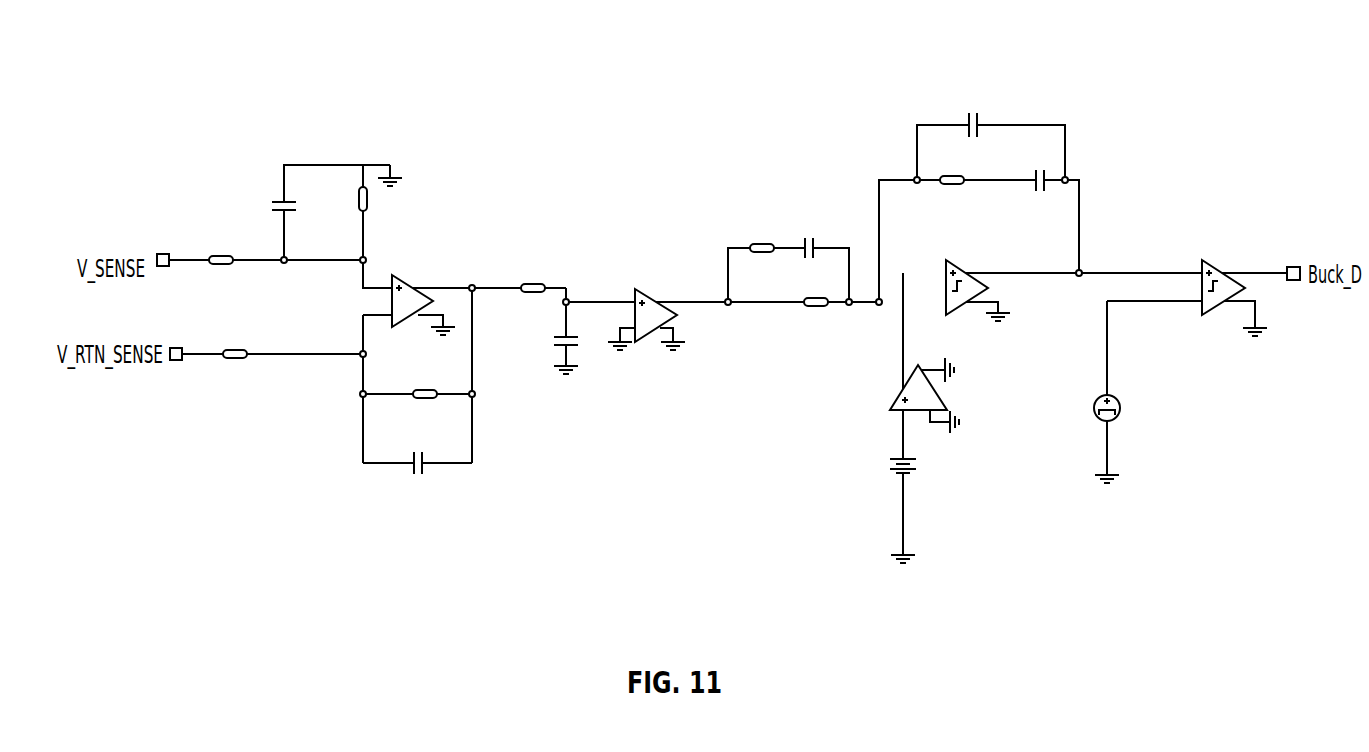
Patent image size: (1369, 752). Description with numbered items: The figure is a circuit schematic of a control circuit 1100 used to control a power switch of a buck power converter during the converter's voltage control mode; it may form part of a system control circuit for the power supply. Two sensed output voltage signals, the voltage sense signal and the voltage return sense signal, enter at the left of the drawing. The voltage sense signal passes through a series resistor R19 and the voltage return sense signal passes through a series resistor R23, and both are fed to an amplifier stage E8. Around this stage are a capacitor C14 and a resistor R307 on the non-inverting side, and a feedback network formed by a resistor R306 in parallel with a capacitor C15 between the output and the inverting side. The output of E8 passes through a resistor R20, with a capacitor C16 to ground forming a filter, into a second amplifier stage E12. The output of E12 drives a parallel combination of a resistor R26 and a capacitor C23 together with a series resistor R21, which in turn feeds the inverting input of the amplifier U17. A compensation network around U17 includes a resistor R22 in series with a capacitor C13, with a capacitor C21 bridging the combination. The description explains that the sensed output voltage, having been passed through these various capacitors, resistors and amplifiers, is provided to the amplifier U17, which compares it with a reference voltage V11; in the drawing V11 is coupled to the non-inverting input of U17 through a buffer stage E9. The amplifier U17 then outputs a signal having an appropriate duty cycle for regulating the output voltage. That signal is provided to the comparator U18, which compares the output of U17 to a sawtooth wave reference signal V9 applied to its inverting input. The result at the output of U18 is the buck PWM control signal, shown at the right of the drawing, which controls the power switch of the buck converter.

The control circuit 1100 is at (1108, 48).
The resistor R19 is at (222, 274).
The resistor R23 is at (235, 369).
The capacitor C14 is at (306, 209).
The resistor R307 is at (391, 209).
The voltage-controlled voltage source E8 is at (412, 316).
The resistor R306 is at (418, 380).
The capacitor C15 is at (421, 450).
The resistor R20 is at (534, 303).
The capacitor C16 is at (543, 345).
The voltage-controlled voltage source E12 is at (656, 301).
The resistor R26 is at (765, 264).
The capacitor C23 is at (811, 234).
The resistor R21 is at (815, 287).
The resistor R22 is at (952, 196).
The capacitor C21 is at (971, 140).
The capacitor C13 is at (1040, 168).
The amplifier U17 is at (960, 274).
The voltage-controlled voltage source E9 is at (906, 385).
The reference voltage V11 is at (924, 474).
The comparator U18 is at (1220, 275).
The sawtooth wave reference signal V9 is at (1123, 398).